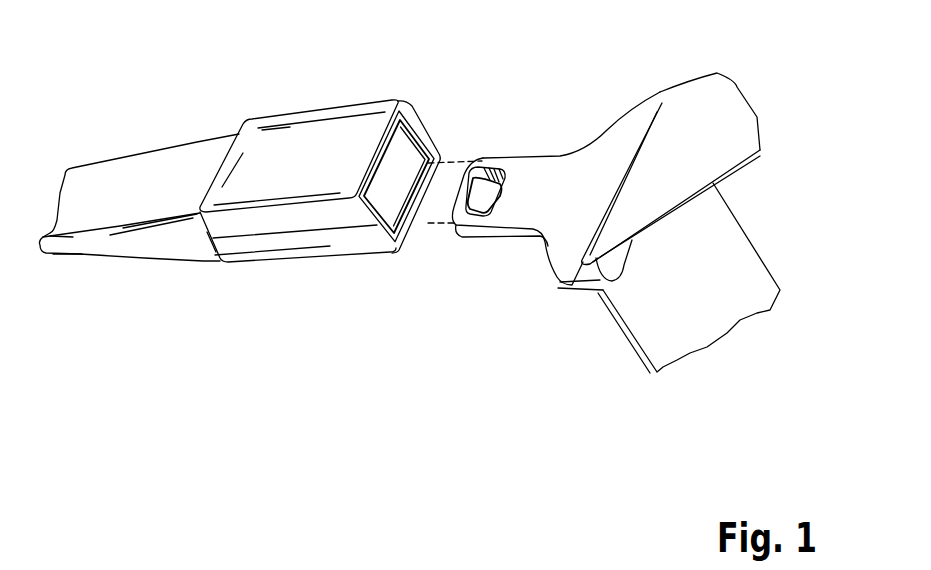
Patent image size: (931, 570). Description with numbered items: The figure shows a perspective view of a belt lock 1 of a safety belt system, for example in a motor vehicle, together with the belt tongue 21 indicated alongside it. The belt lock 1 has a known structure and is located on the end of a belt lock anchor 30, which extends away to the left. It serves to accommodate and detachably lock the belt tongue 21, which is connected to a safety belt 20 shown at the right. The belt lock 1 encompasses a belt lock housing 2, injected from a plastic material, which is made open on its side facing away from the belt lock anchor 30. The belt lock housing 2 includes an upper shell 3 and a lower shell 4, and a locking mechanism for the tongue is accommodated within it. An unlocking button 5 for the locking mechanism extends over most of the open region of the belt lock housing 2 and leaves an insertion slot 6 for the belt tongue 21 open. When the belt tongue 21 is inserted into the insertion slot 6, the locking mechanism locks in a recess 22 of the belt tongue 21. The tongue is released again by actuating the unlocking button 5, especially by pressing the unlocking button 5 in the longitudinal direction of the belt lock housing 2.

The belt lock 1 is at (190, 64).
The belt lock housing 2 is at (355, 259).
The upper shell 3 is at (332, 133).
The lower shell 4 is at (238, 254).
The unlocking button 5 is at (424, 138).
The insertion slot 6 is at (447, 157).
The safety belt 20 is at (730, 107).
The belt tongue 21 is at (577, 163).
The recess 22 is at (483, 205).
The belt lock anchor 30 is at (130, 168).